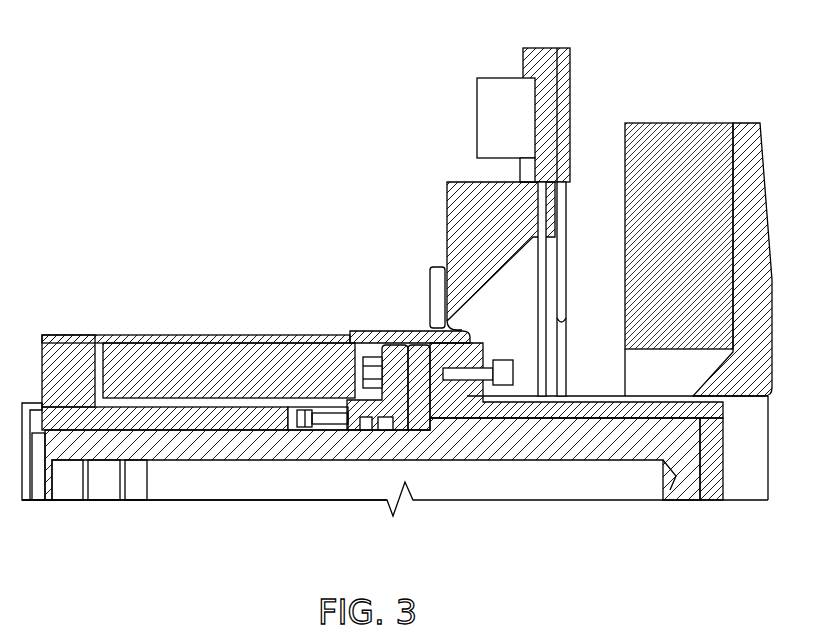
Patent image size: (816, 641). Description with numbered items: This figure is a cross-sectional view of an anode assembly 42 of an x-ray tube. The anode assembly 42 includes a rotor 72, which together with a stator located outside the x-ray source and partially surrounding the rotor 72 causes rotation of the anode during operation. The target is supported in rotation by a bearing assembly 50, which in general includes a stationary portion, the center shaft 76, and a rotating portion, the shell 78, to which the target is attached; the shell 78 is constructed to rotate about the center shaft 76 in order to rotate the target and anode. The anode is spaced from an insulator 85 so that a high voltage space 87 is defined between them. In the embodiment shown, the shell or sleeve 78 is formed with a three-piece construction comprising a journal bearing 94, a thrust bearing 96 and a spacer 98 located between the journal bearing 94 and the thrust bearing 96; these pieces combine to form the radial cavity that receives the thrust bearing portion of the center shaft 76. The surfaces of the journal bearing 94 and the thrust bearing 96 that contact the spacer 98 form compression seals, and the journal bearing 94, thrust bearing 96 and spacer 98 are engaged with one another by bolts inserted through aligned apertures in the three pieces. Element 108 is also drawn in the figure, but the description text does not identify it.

The anode assembly 42 is at (40, 508).
The bearing assembly 50 is at (260, 508).
The rotor 72 is at (152, 376).
The center shaft 76 is at (500, 448).
The shell 78 is at (710, 478).
The insulator 85 is at (458, 227).
The high voltage space 87 is at (568, 375).
The journal bearing 94 is at (537, 410).
The thrust bearing 96 is at (351, 432).
The spacer 98 is at (427, 405).
The bolt 108 is at (480, 365).